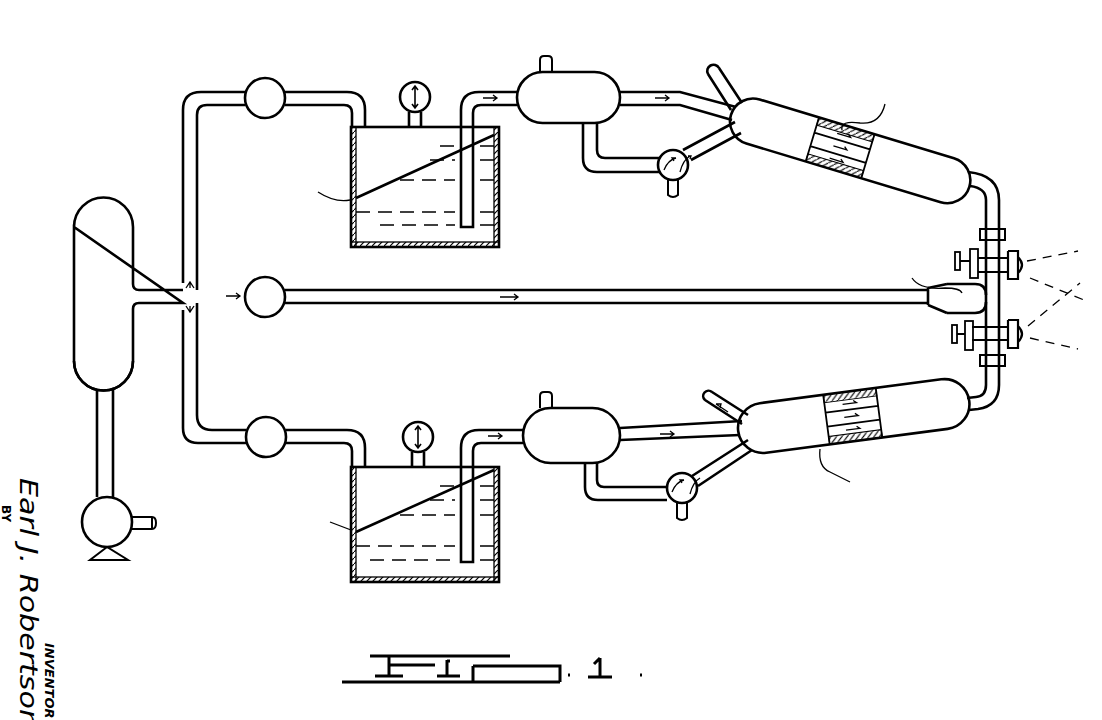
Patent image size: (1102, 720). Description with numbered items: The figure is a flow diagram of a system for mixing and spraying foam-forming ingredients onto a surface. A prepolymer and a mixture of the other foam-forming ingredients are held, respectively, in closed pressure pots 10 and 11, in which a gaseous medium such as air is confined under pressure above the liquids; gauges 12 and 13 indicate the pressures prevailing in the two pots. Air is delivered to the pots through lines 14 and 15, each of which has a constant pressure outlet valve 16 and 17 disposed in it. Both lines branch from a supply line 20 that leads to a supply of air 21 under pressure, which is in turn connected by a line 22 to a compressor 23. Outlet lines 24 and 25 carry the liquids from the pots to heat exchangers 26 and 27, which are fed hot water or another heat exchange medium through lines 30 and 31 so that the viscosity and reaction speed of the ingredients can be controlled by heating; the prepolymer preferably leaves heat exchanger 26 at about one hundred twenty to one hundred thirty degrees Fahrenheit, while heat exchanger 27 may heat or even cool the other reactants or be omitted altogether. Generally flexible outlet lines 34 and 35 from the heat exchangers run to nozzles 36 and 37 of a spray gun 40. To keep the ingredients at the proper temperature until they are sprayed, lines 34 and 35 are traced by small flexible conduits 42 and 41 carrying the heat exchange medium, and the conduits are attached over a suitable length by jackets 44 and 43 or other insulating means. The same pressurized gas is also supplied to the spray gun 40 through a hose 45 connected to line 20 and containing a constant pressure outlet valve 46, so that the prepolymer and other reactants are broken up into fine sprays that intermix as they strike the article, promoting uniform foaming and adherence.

The pressure pot 10 is at (500, 216).
The pressure pot 11 is at (500, 538).
The gauge 12 is at (420, 84).
The gauge 13 is at (424, 424).
The line 14 is at (195, 233).
The line 15 is at (199, 370).
The constant pressure outlet valve 16 is at (265, 77).
The constant pressure outlet valve 17 is at (270, 418).
The supply line 20 is at (152, 298).
The supply of air 21 is at (73, 292).
The line 22 is at (110, 450).
The compressor 23 is at (86, 506).
The outlet line 24 is at (478, 88).
The outlet line 25 is at (485, 426).
The heat exchanger 26 is at (600, 72).
The heat exchanger 27 is at (580, 408).
The line 30 is at (602, 140).
The line 31 is at (632, 483).
The outlet line 34 is at (688, 95).
The outlet line 35 is at (647, 425).
The nozzle 36 is at (1024, 260).
The nozzle 37 is at (1026, 340).
The spray gun 40 is at (947, 304).
The flexible conduit 41 is at (718, 395).
The flexible conduit 42 is at (731, 86).
The jacket 43 is at (848, 393).
The jacket 44 is at (852, 175).
The hose 45 is at (693, 290).
The constant pressure outlet valve 46 is at (272, 278).